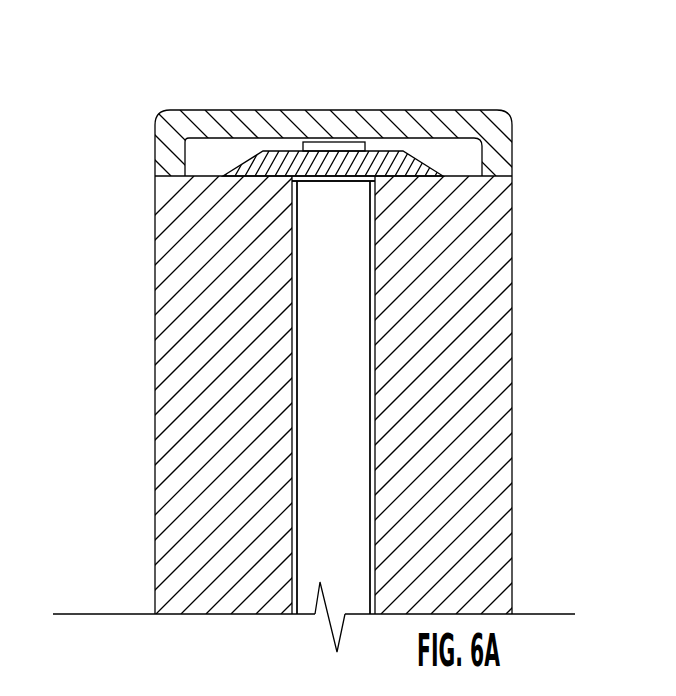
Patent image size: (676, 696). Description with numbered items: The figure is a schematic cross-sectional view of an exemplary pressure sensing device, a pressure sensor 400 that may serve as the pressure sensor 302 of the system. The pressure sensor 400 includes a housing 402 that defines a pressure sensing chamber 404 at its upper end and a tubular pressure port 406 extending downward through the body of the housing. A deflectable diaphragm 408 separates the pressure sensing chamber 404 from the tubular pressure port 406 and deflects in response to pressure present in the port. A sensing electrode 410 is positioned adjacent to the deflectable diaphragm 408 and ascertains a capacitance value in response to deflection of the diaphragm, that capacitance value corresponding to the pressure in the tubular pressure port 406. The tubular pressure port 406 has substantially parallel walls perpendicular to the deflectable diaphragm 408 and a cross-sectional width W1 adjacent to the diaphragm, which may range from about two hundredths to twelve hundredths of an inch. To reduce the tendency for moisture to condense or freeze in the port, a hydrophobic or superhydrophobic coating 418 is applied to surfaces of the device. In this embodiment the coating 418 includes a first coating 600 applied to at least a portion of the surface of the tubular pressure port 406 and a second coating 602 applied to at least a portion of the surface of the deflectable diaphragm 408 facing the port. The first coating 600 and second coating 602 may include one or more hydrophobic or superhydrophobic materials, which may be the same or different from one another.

The pressure sensor 302 is at (475, 72).
The pressure sensor 400 is at (333, 362).
The housing 402 is at (512, 287).
The pressure sensing chamber 404 is at (466, 158).
The tubular pressure port 406 is at (352, 405).
The deflectable diaphragm 408 is at (387, 151).
The sensing electrode 410 is at (340, 142).
The hydrophobic or superhydrophobic coating 418 is at (349, 336).
The first coating 600 is at (302, 438).
The second coating 602 is at (358, 185).
The cross-sectional width W1 is at (370, 287).